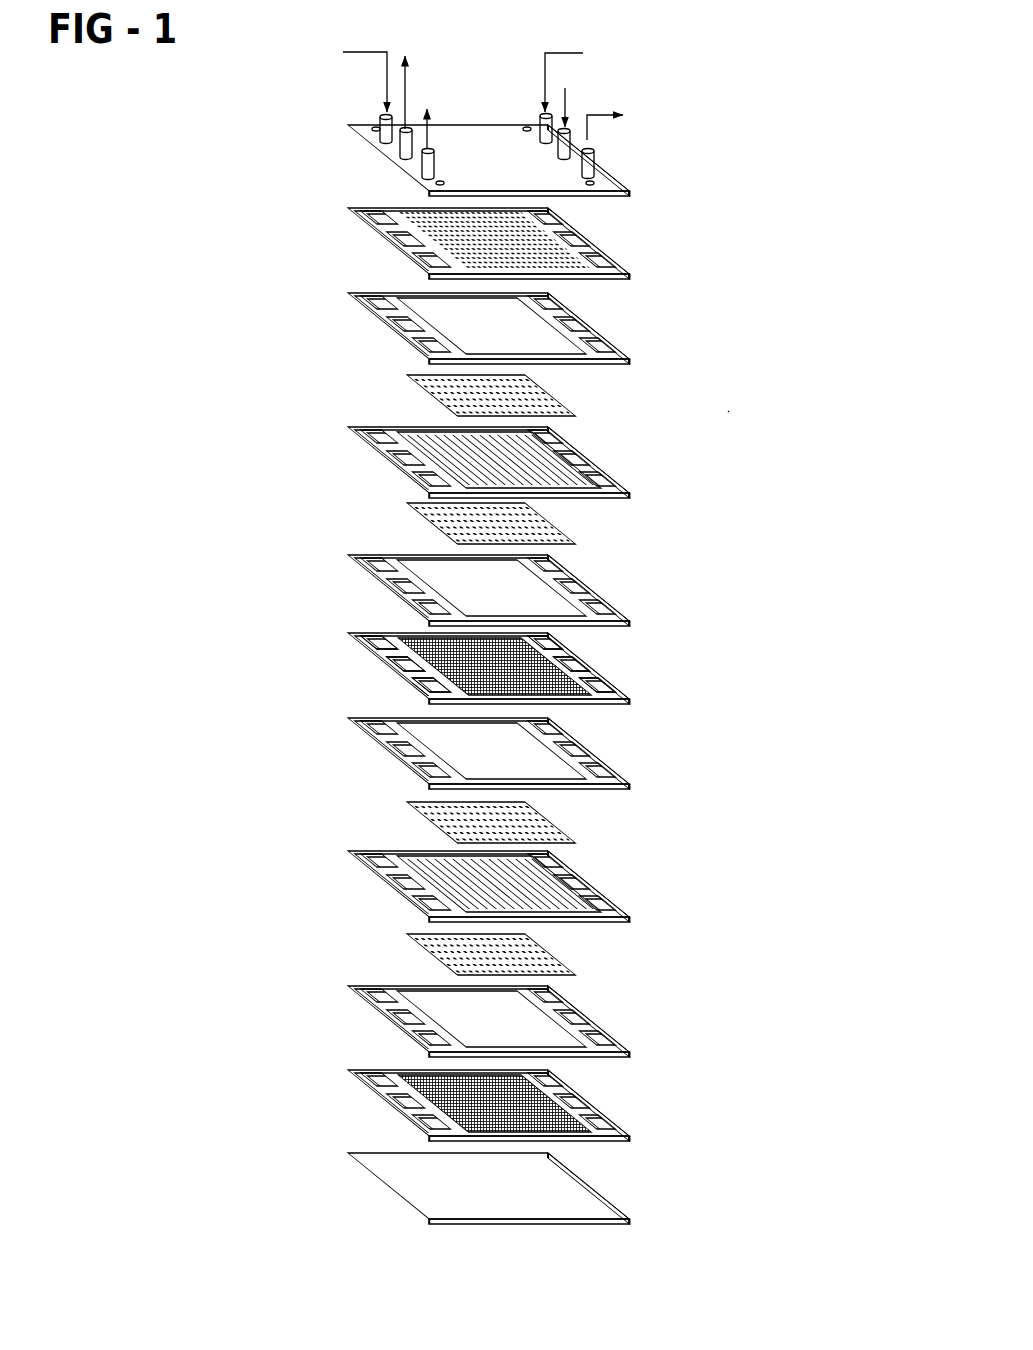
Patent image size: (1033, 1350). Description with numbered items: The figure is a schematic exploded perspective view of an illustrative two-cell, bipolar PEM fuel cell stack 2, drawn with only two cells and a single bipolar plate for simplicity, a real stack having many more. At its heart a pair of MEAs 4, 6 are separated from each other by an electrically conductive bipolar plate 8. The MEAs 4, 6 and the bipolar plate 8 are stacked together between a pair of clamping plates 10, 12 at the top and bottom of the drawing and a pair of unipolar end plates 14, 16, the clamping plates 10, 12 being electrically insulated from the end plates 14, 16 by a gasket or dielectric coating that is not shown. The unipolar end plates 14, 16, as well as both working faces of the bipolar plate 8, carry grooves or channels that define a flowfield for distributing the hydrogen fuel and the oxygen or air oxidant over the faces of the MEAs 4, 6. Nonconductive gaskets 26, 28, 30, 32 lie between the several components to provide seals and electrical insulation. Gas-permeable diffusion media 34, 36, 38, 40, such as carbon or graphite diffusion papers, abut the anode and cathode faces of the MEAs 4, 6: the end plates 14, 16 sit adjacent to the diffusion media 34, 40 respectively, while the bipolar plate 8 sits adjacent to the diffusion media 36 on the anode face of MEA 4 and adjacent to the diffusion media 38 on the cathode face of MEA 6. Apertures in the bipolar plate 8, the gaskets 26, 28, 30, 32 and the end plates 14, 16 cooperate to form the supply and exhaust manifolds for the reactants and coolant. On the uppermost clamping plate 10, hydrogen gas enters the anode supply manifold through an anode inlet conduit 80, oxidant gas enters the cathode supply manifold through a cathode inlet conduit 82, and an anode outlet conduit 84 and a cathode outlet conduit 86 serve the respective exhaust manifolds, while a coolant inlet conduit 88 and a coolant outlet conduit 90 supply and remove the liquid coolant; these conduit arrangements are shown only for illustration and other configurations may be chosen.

The PEM fuel cell stack 2 is at (733, 410).
The MEA 4 is at (374, 464).
The MEA 6 is at (594, 878).
The bipolar plate 8 is at (494, 654).
The clamping plate 10 is at (372, 161).
The clamping plate 12 is at (602, 1195).
The unipolar end plate 14 is at (450, 250).
The unipolar end plate 16 is at (511, 1097).
The nonconductive gasket 26 is at (397, 302).
The nonconductive gasket 28 is at (392, 596).
The nonconductive gasket 30 is at (575, 752).
The nonconductive gasket 32 is at (578, 1012).
The gas-permeable diffusion media 34 is at (438, 397).
The gas-permeable diffusion media 36 is at (438, 522).
The gas-permeable diffusion media 38 is at (540, 822).
The gas-permeable diffusion media 40 is at (540, 952).
The anode inlet conduit 80 is at (538, 127).
The cathode inlet conduit 82 is at (381, 122).
The anode outlet conduit 84 is at (424, 165).
The cathode outlet conduit 86 is at (592, 163).
The coolant inlet conduit 88 is at (568, 137).
The coolant outlet conduit 90 is at (402, 148).